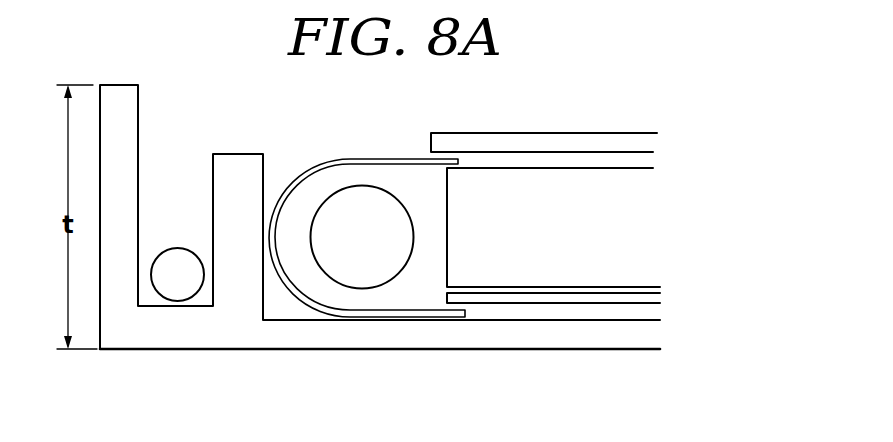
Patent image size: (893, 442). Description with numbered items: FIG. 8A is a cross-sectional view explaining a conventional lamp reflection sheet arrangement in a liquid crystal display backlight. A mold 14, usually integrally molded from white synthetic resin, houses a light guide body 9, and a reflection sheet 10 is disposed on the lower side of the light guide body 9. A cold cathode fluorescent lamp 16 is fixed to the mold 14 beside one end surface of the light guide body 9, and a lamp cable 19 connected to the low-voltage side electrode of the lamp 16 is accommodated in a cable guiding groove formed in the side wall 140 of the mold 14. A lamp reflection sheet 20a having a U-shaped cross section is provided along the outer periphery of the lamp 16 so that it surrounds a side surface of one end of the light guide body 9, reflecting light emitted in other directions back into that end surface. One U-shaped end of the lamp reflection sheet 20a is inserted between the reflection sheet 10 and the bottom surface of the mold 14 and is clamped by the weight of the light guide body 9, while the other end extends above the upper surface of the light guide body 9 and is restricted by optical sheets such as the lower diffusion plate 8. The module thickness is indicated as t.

The side wall 140 is at (128, 112).
The lamp reflection sheet 20a is at (377, 157).
The lower diffusion plate 8 is at (638, 138).
The light guide body 9 is at (637, 238).
The lamp cable 19 is at (173, 290).
The cold cathode fluorescent lamp 16 is at (360, 273).
The mold 14 is at (493, 338).
The reflection sheet 10 is at (613, 300).